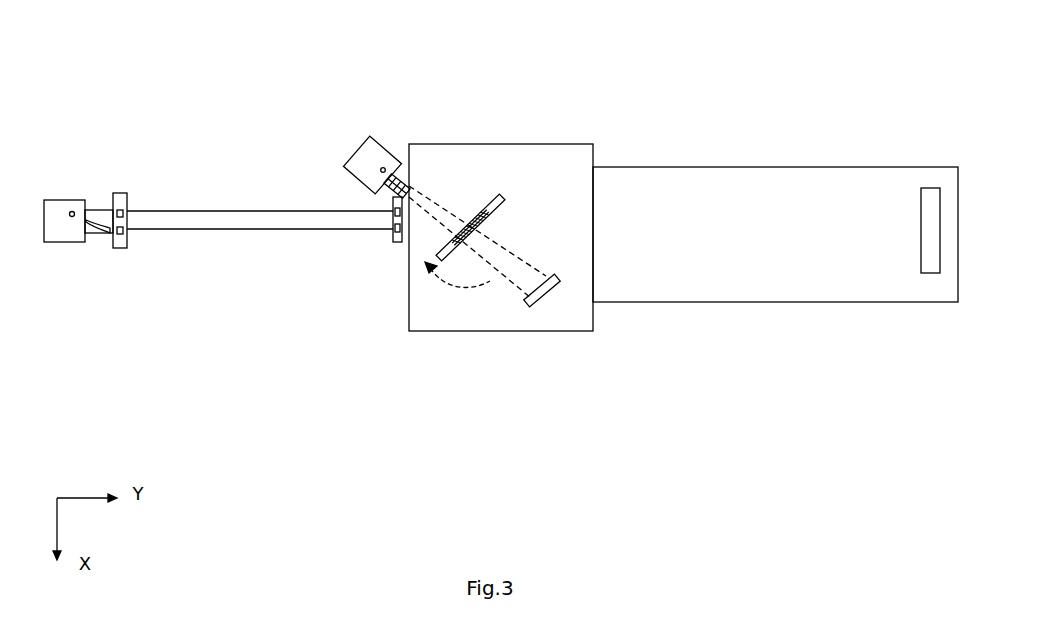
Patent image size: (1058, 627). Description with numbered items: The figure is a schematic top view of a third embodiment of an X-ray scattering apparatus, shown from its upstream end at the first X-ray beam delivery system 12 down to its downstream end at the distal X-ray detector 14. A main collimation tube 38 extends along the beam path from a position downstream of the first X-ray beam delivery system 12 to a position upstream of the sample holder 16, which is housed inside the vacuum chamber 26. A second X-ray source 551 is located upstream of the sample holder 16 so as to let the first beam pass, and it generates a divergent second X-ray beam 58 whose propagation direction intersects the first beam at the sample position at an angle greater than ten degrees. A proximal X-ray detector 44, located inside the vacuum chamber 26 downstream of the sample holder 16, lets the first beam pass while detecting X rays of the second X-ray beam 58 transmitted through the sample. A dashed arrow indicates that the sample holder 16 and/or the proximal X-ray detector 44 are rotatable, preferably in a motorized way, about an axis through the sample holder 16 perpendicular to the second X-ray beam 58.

The first X-ray beam delivery system 12 is at (60, 181).
The main collimation tube 38 is at (216, 230).
The second X-ray source 551 is at (357, 147).
The vacuum chamber 26 is at (432, 332).
The sample holder 16 is at (491, 194).
The second X-ray beam 58 is at (497, 257).
The proximal X-ray detector 44 is at (543, 297).
The distal X-ray detector 14 is at (926, 188).